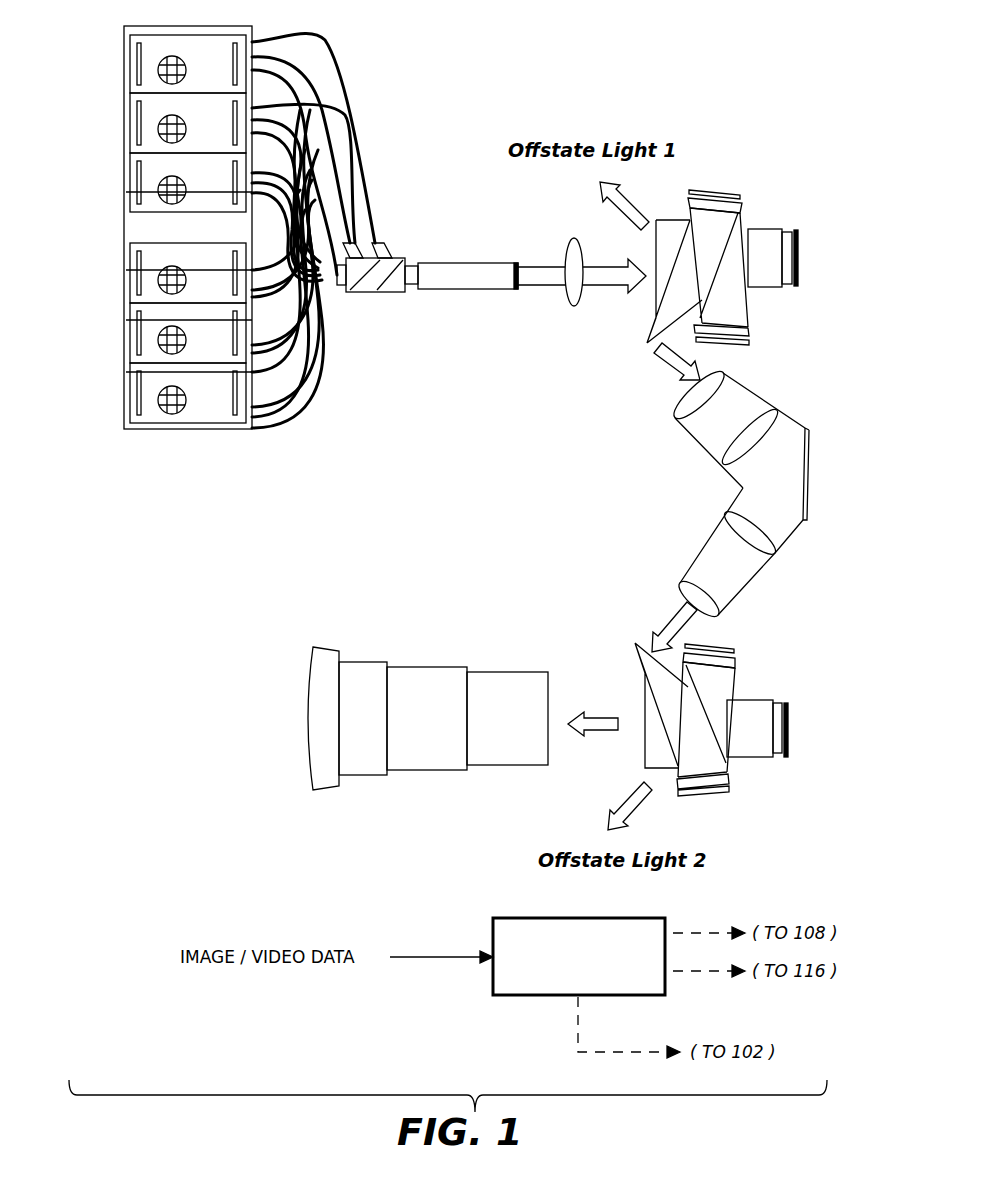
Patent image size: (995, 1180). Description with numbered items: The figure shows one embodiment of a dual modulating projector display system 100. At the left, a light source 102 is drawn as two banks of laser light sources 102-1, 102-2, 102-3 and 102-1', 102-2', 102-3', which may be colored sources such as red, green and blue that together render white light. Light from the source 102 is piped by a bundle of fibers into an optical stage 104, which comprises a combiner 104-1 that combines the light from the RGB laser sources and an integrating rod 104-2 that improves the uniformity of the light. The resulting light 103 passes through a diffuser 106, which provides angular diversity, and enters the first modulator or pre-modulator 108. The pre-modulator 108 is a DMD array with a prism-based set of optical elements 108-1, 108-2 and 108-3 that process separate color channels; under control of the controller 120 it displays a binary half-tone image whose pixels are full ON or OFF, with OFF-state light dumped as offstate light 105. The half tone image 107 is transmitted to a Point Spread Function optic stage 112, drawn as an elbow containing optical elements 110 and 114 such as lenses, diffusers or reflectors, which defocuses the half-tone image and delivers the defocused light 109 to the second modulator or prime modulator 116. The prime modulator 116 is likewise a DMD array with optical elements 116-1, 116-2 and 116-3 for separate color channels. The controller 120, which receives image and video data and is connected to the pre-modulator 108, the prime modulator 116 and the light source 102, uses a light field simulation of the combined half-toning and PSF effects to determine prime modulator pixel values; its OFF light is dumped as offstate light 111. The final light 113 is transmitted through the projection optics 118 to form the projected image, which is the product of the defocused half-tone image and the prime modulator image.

The dual modulating projector display system 100 is at (563, 50).
The light source 102 is at (124, 432).
The laser light source 102-1' is at (152, 64).
The laser light source 102-2' is at (152, 123).
The laser light source 102-3' is at (155, 182).
The laser light source 102-1 is at (158, 273).
The laser light source 102-2 is at (158, 333).
The laser light source 102-3 is at (158, 394).
The light 103 is at (552, 262).
The optical stage 104 is at (347, 300).
The combiner 104-1 is at (392, 257).
The integrating rod 104-2 is at (473, 262).
The offstate light 105 is at (634, 196).
The diffuser 106 is at (576, 310).
The half tone image 107 is at (660, 362).
The first modulator/pre-modulator 108 is at (801, 190).
The optical element for color channel 108-1 is at (697, 195).
The optical element for color channel 108-2 is at (798, 228).
The optical element for color channel 108-3 is at (728, 345).
The defocused half-tone image light 109 is at (655, 635).
The optical element 110 is at (722, 470).
The offstate light 111 is at (600, 796).
The Point Spread Function optic stage 112 is at (809, 390).
The light 113 is at (609, 712).
The optical element 114 is at (782, 558).
The second modulator/prime modulator 116 is at (805, 648).
The optical element for color channel 116-1 is at (735, 662).
The optical element for color channel 116-2 is at (772, 757).
The optical element for color channel 116-3 is at (680, 796).
The projection optics 118 is at (372, 660).
The controller 120 is at (618, 918).